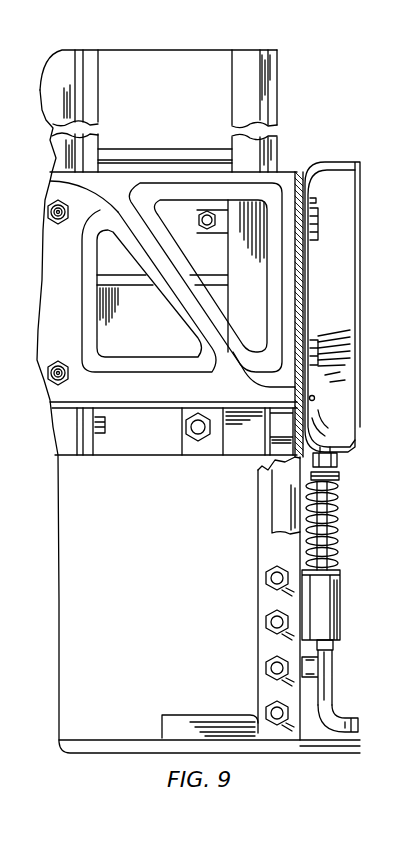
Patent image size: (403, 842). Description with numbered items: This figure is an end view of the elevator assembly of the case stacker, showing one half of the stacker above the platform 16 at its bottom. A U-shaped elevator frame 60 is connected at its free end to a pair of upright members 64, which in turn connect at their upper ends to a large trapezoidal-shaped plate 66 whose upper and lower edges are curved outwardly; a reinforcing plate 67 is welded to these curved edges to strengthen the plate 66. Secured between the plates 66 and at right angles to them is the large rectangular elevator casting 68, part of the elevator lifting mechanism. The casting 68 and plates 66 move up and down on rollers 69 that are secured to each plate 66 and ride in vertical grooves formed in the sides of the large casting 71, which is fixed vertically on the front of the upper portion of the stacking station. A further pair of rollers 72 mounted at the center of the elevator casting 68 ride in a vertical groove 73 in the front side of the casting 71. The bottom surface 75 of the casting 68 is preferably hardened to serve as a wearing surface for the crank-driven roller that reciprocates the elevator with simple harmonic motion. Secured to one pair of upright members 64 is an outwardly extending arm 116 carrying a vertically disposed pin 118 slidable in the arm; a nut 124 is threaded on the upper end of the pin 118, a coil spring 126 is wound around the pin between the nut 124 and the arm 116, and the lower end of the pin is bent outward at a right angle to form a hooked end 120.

The platform 16 is at (352, 745).
The elevator frame 60 is at (173, 723).
The upright member 64 is at (264, 544).
The trapezoidal-shaped plate 66 is at (302, 174).
The reinforcing plate 67 is at (360, 330).
The elevator casting 68 is at (157, 392).
The roller 69 is at (277, 445).
The casting 71 is at (267, 110).
The roller 72 is at (47, 215).
The vertical groove 73 is at (73, 75).
The bottom surface 75 is at (177, 407).
The arm 116 is at (340, 600).
The pin 118 is at (333, 676).
The hooked end 120 is at (348, 713).
The nut 124 is at (338, 468).
The coil spring 126 is at (340, 536).